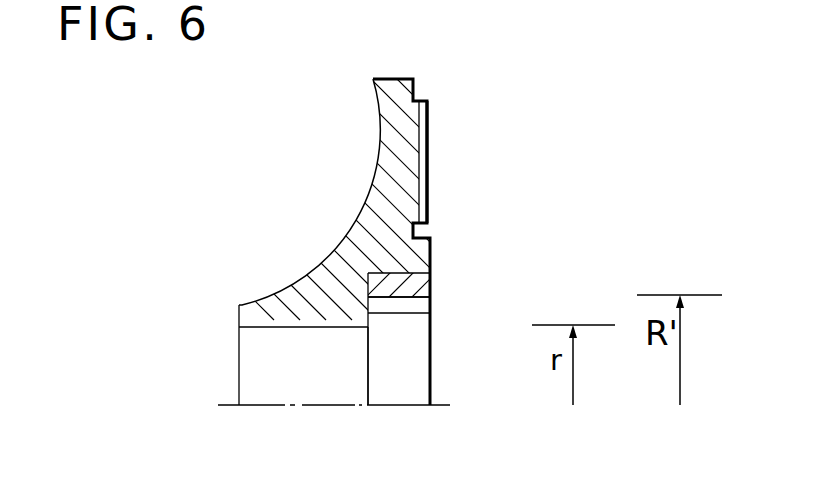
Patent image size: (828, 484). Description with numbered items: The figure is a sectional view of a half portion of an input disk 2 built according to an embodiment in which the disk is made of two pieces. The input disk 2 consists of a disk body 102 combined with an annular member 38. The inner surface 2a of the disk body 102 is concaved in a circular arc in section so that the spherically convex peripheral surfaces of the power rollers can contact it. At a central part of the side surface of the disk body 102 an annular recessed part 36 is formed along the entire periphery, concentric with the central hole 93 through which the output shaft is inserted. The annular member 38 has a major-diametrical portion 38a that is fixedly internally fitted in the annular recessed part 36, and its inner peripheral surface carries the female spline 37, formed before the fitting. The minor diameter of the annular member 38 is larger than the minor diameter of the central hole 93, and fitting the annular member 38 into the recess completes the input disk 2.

The input disk 2 is at (410, 135).
The inner surface 2a is at (335, 245).
The disk body 102 is at (415, 176).
The annular recessed part 36 is at (433, 273).
The major-diametrical portion 38a is at (430, 295).
The female spline 37 is at (413, 308).
The annular member 38 is at (393, 322).
The central hole 93 is at (290, 328).